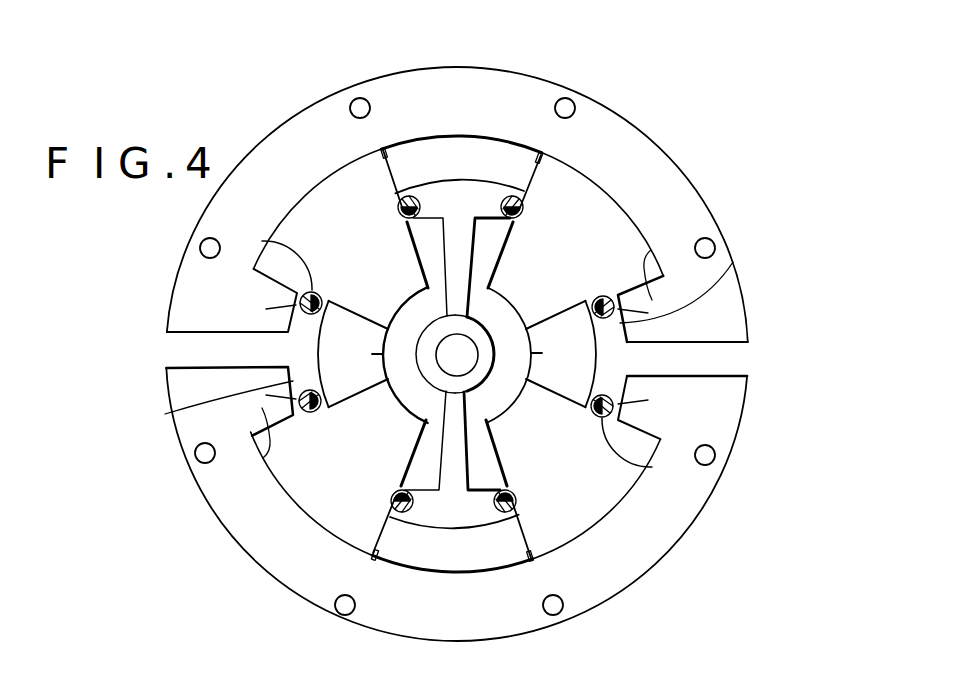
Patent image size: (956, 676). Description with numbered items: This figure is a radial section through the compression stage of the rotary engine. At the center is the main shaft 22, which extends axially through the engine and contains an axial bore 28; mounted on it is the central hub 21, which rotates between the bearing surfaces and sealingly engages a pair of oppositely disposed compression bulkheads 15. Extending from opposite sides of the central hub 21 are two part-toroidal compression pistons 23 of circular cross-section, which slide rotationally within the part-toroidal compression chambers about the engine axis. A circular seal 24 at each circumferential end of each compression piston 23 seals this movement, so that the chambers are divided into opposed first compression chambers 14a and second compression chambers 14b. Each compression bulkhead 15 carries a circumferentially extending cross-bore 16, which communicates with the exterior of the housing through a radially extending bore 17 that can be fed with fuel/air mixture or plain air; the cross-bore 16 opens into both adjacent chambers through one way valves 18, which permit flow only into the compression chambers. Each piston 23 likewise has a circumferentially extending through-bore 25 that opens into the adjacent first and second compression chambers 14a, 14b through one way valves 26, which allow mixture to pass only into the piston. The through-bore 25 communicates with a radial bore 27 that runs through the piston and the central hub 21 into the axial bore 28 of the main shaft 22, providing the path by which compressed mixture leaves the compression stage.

The first compression chambers 14a is at (390, 243).
The second compression chambers 14b is at (608, 235).
The compression bulkheads 15 is at (637, 386).
The cross-bore 16 is at (722, 262).
The radially extending bore 17 is at (683, 356).
The one way valves 18 is at (663, 275).
The central hub 21 is at (476, 335).
The main shaft 22 is at (426, 368).
The compression pistons 23 is at (450, 190).
The circular seal 24 is at (383, 148).
The through-bore 25 is at (468, 540).
The one way valves 26 is at (392, 497).
The radial bore 27 is at (458, 438).
The axial bore 28 is at (467, 365).